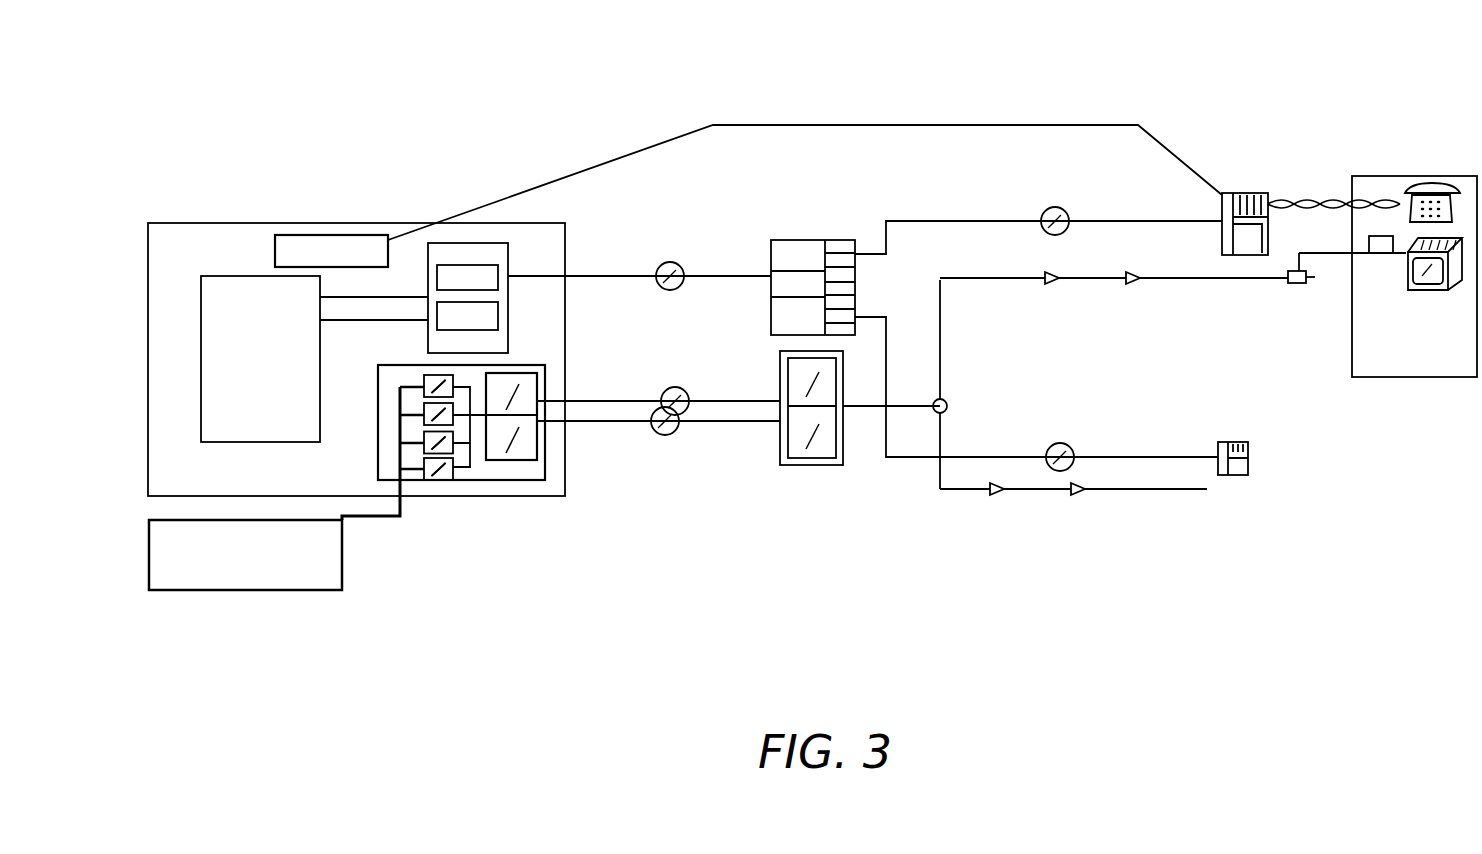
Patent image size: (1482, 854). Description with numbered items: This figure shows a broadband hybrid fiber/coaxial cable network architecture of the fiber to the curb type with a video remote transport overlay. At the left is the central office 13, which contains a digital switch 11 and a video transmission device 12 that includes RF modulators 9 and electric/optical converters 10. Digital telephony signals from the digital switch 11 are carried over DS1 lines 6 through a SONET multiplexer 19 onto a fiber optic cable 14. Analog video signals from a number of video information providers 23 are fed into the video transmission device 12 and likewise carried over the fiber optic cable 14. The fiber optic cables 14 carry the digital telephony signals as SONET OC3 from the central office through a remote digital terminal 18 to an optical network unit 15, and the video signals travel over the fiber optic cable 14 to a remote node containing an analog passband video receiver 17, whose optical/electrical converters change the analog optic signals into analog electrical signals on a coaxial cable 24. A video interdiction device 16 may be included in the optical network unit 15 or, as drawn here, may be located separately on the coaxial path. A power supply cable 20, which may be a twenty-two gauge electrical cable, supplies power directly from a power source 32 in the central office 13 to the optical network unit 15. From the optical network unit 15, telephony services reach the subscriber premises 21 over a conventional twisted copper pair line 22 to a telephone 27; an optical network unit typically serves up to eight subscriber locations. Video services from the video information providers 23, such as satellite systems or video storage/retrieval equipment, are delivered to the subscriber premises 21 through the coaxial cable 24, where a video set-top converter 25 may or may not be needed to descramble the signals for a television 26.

The DS1 lines 6 is at (352, 297).
The RF modulators 9 is at (447, 477).
The electric/optical converters 10 is at (512, 460).
The digital switch 11 is at (242, 293).
The video transmission device 12 is at (528, 480).
The central office 13 is at (386, 223).
The fiber optic cable 14 is at (580, 422).
The optical network unit 15 is at (1220, 205).
The video interdiction device 16 is at (1287, 282).
The analog passband video receiver 17 is at (806, 465).
The remote digital terminal 18 is at (771, 250).
The SONET multiplexer 19 is at (510, 248).
The power supply cable 20 is at (922, 125).
The subscriber premises 21 is at (1415, 378).
The twisted copper pair line 22 is at (1378, 200).
The video information providers 23 is at (227, 592).
The coaxial cable 24 is at (1213, 280).
The video set-top converter 25 is at (1384, 255).
The television 26 is at (1437, 292).
The telephone 27 is at (1455, 182).
The power source 32 is at (362, 235).